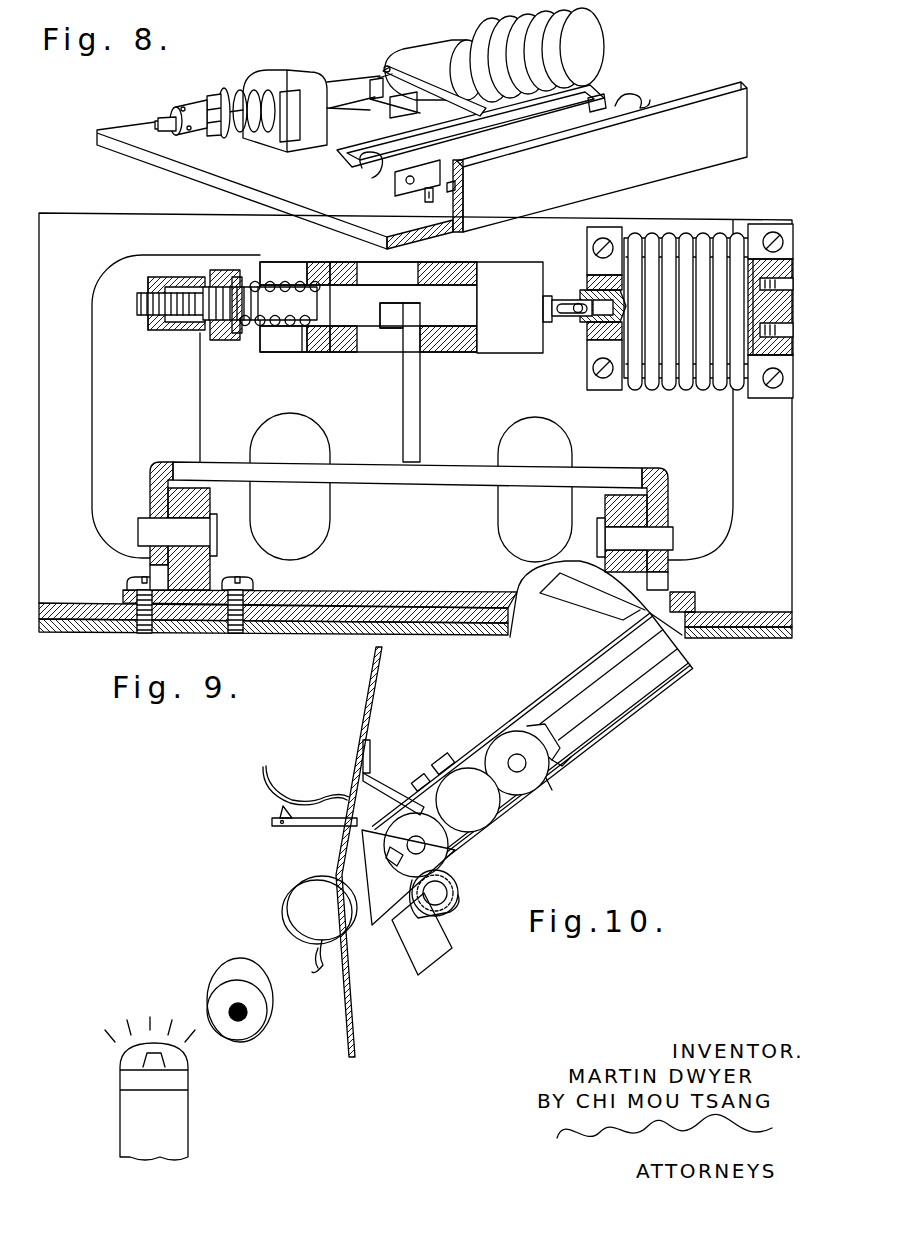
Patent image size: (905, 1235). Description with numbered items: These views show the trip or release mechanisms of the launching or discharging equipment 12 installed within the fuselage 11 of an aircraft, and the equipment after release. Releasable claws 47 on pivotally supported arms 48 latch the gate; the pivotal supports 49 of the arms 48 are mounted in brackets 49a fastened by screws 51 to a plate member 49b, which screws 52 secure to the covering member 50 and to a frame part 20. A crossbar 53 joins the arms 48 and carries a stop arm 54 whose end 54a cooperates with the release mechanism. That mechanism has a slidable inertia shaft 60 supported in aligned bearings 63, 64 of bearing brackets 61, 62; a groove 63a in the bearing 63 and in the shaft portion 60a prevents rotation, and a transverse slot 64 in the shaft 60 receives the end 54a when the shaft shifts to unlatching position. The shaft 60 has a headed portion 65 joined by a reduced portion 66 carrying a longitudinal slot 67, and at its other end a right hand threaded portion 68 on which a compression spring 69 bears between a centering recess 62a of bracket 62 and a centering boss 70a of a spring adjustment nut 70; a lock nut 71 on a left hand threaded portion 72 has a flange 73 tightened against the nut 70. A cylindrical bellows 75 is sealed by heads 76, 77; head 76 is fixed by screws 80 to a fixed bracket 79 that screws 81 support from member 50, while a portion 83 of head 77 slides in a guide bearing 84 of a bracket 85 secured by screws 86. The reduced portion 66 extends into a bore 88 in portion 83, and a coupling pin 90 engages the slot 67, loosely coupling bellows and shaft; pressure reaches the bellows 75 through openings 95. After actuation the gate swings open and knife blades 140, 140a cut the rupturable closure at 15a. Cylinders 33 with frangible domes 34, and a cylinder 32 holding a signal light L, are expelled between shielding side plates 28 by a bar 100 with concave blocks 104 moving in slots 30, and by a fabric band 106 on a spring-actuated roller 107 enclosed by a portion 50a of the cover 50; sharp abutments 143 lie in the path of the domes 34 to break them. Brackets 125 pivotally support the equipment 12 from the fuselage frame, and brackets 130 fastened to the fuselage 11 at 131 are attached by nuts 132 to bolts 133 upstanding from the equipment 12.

In FIG. 10, the fuselage 11 is at (380, 690).
In FIG. 10, the launching or discharging equipment 12 is at (691, 673).
In FIG. 10, the cut location in rupturable closure 15a is at (270, 775).
In FIG. 9, the frame part 20 is at (750, 638).
In FIG. 10, the shielding side plate 28 is at (618, 725).
In FIG. 10, the slot or space in side plate 30 is at (653, 692).
In FIG. 10, the signal light cylinder 32 is at (188, 1112).
In FIG. 10, the dye marker cylinder 33 is at (490, 828).
In FIG. 10, the frangible dome 34 is at (517, 755).
In FIG. 9, the releasable claw or catch member 47 is at (152, 575).
In FIG. 8, the pivotally supported arm 48 is at (370, 172).
In FIG. 9, the pivotally supported arm 48 is at (150, 470).
In FIG. 8, the pivotal support 49 is at (400, 182).
In FIG. 9, the pivotal support 49 is at (195, 535).
In FIG. 8, the bracket 49a is at (458, 172).
In FIG. 9, the bracket 49a is at (200, 500).
In FIG. 8, the plate member 49b is at (188, 150).
In FIG. 9, the covering or enclosing member 50 is at (775, 561).
In FIG. 10, the covering or enclosing member 50 is at (445, 952).
In FIG. 10, the cover portion 50a is at (458, 905).
In FIG. 8, the screw 51 is at (463, 190).
In FIG. 9, the screw 51 is at (236, 633).
In FIG. 8, the screw 52 is at (428, 200).
In FIG. 9, the screw 52 is at (125, 600).
In FIG. 8, the crossbar 53 is at (478, 118).
In FIG. 9, the crossbar 53 is at (355, 462).
In FIG. 8, the crank rod or stop arm 54 is at (442, 92).
In FIG. 9, the crank rod or stop arm 54 is at (421, 388).
In FIG. 8, the end of stop arm 54a is at (388, 64).
In FIG. 9, the end of stop arm 54a is at (392, 330).
In FIG. 8, the slidable bar or shaft 60 is at (337, 82).
In FIG. 9, the slidable bar or shaft 60 is at (340, 352).
In FIG. 8, the shaft portion 60a is at (372, 110).
In FIG. 8, the bearing bracket 61 is at (417, 52).
In FIG. 9, the bearing bracket 61 is at (465, 270).
In FIG. 8, the bearing bracket 62 is at (290, 70).
In FIG. 9, the bearing bracket 62 is at (310, 352).
In FIG. 9, the centering recess 62a is at (302, 352).
In FIG. 8, the bearing 63 is at (392, 112).
In FIG. 9, the bearing 63 is at (470, 295).
In FIG. 8, the groove or recess 63a is at (383, 76).
In FIG. 9, the groove or recess 63a is at (410, 300).
In FIG. 8, the transverse slot or recess 64 is at (290, 140).
In FIG. 9, the transverse slot or recess 64 is at (312, 262).
In FIG. 8, the headed portion 65 is at (462, 44).
In FIG. 9, the headed portion 65 is at (505, 355).
In FIG. 9, the reduced diameter portion 66 is at (548, 322).
In FIG. 9, the longitudinal slot 67 is at (565, 298).
In FIG. 8, the right hand threaded portion 68 is at (226, 90).
In FIG. 9, the right hand threaded portion 68 is at (222, 270).
In FIG. 8, the compression spring 69 is at (250, 135).
In FIG. 9, the compression spring 69 is at (256, 280).
In FIG. 8, the spring adjustment nut 70 is at (210, 96).
In FIG. 9, the spring adjustment nut 70 is at (222, 340).
In FIG. 9, the centering boss 70a is at (250, 322).
In FIG. 8, the lock nut 71 is at (188, 106).
In FIG. 9, the lock nut 71 is at (155, 333).
In FIG. 8, the left hand threaded portion 72 is at (160, 118).
In FIG. 9, the left hand threaded portion 72 is at (180, 315).
In FIG. 9, the flange portion 73 is at (185, 278).
In FIG. 8, the bellows 75 is at (585, 34).
In FIG. 9, the bellows 75 is at (690, 240).
In FIG. 9, the bellows head 76 is at (775, 225).
In FIG. 9, the bellows head 77 is at (630, 240).
In FIG. 8, the fixed bracket 79 is at (598, 100).
In FIG. 9, the fixed bracket 79 is at (792, 335).
In FIG. 9, the screw 80 is at (765, 398).
In FIG. 9, the screw 81 is at (778, 398).
In FIG. 9, the slidable portion of bellows head 83 is at (608, 230).
In FIG. 9, the guide bearing 84 is at (617, 332).
In FIG. 8, the bracket 85 is at (488, 28).
In FIG. 9, the bracket 85 is at (612, 342).
In FIG. 9, the screw 86 is at (605, 390).
In FIG. 9, the axial bore 88 is at (622, 300).
In FIG. 9, the coupling pin 90 is at (578, 304).
In FIG. 9, the opening 95 is at (330, 518).
In FIG. 10, the ejection bar or rod 100 is at (556, 754).
In FIG. 10, the block 104 is at (540, 722).
In FIG. 10, the band 106 is at (550, 783).
In FIG. 10, the spring-actuated roller 107 is at (457, 888).
In FIG. 10, the bracket 125 is at (575, 598).
In FIG. 10, the bracket 130 is at (375, 778).
In FIG. 10, the attachment point 131 is at (372, 748).
In FIG. 10, the nut 132 is at (440, 765).
In FIG. 10, the bolt 133 is at (428, 780).
In FIG. 10, the knife blade 140 is at (275, 812).
In FIG. 10, the knife blade 140a is at (296, 828).
In FIG. 10, the glass breaker or sharp abutment 143 is at (387, 920).
In FIG. 10, the signal light L is at (152, 1055).